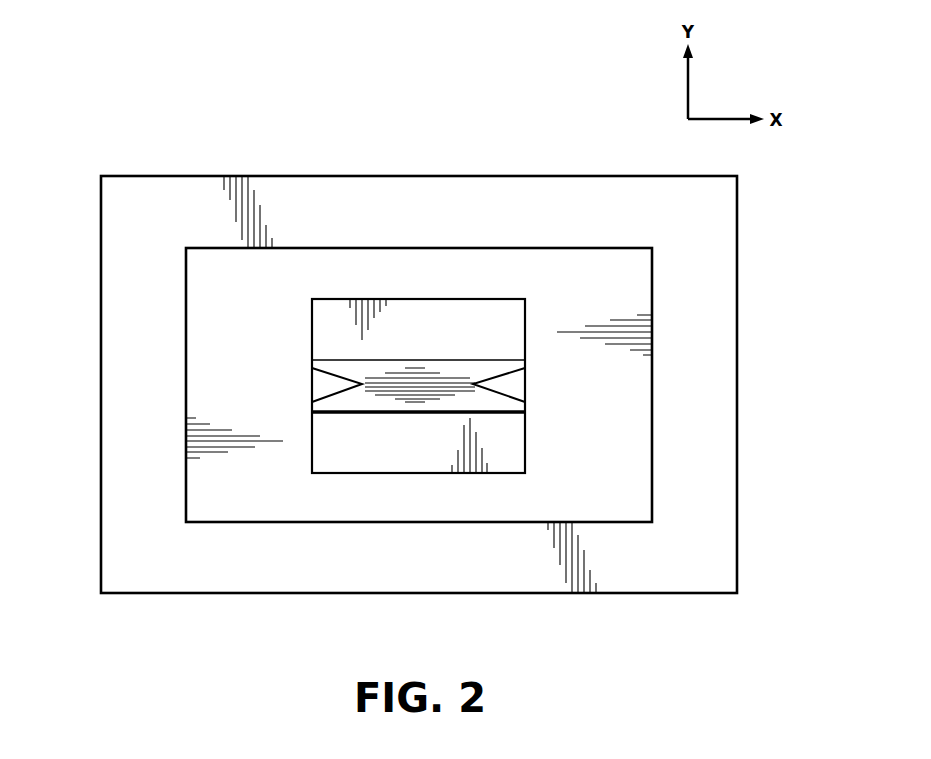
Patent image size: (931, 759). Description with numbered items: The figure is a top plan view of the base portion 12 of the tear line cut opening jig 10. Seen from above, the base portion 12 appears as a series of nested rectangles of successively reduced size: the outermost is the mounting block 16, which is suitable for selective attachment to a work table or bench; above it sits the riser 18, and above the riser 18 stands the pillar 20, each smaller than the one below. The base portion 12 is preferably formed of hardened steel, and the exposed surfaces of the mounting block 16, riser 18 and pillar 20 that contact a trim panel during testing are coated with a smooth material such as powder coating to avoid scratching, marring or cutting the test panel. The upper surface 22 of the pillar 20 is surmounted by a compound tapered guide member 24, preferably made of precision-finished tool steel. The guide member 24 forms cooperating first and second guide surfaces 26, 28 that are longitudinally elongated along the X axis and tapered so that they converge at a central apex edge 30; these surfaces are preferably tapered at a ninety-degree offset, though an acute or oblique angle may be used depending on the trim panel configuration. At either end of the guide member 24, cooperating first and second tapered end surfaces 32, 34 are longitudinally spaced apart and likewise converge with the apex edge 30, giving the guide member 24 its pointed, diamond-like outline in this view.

The tear line cut opening jig 10 is at (133, 145).
The base portion 12 is at (405, 168).
The mounting block 16 is at (707, 228).
The riser 18 is at (237, 335).
The pillar 20 is at (477, 325).
The upper surface 22 is at (348, 412).
The compound tapered guide member 24 is at (442, 428).
The first guide surface 26 is at (391, 398).
The second guide surface 28 is at (364, 372).
The apex edge 30 is at (428, 387).
The first tapered end surface 32 is at (325, 382).
The second tapered end surface 34 is at (525, 390).